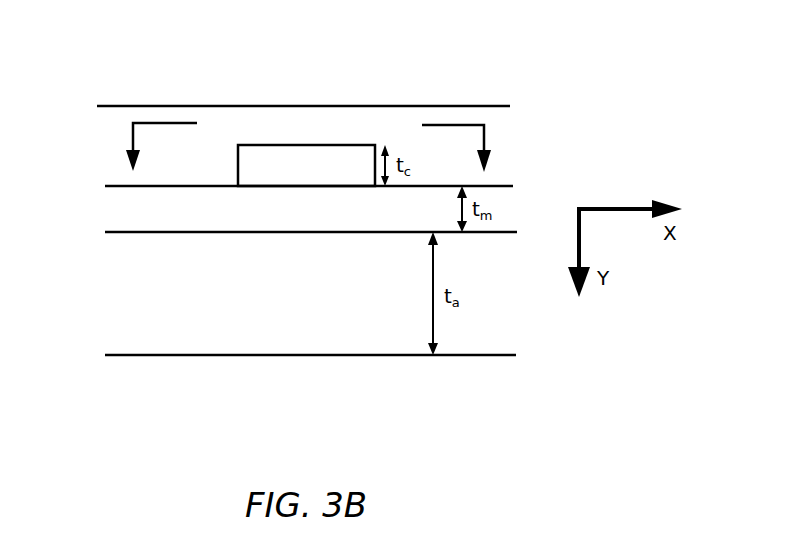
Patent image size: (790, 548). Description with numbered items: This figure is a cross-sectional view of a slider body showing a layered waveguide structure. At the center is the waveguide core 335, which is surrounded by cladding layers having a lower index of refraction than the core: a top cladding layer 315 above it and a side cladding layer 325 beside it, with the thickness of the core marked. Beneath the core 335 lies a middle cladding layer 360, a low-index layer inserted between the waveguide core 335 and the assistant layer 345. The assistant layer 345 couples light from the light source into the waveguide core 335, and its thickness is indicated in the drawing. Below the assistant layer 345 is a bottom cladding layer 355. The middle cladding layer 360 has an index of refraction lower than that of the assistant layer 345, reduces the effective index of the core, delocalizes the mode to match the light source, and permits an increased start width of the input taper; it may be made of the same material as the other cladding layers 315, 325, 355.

The top cladding layer 315 is at (272, 47).
The side cladding layer 325 is at (500, 165).
The waveguide core 335 is at (238, 170).
The middle cladding layer 360 is at (117, 212).
The assistant layer 345 is at (194, 273).
The bottom cladding layer 355 is at (162, 378).